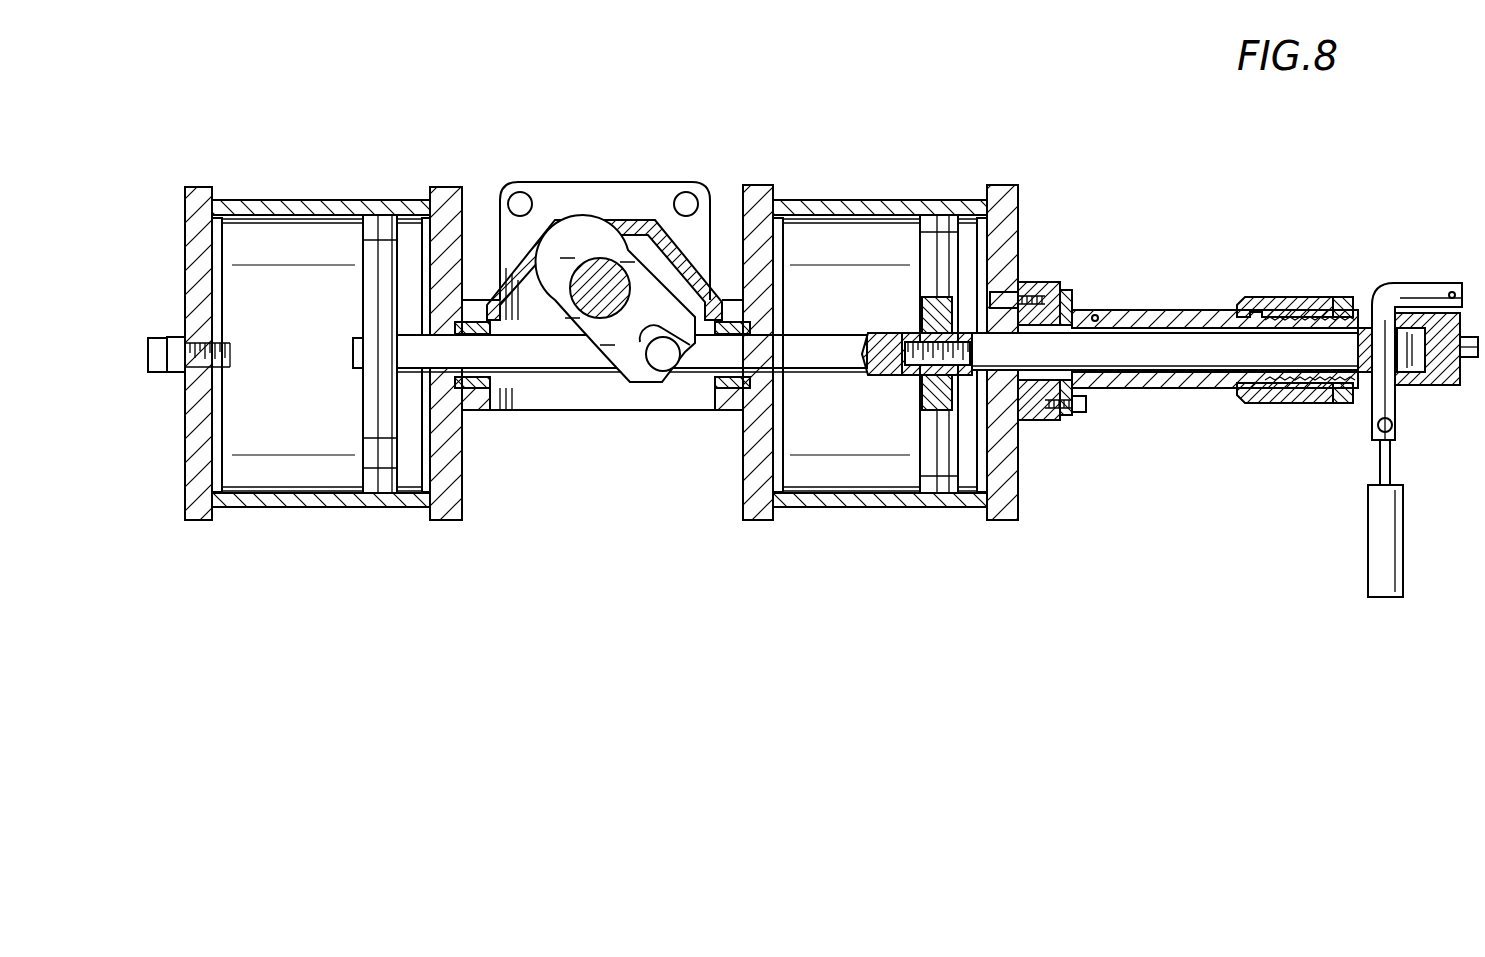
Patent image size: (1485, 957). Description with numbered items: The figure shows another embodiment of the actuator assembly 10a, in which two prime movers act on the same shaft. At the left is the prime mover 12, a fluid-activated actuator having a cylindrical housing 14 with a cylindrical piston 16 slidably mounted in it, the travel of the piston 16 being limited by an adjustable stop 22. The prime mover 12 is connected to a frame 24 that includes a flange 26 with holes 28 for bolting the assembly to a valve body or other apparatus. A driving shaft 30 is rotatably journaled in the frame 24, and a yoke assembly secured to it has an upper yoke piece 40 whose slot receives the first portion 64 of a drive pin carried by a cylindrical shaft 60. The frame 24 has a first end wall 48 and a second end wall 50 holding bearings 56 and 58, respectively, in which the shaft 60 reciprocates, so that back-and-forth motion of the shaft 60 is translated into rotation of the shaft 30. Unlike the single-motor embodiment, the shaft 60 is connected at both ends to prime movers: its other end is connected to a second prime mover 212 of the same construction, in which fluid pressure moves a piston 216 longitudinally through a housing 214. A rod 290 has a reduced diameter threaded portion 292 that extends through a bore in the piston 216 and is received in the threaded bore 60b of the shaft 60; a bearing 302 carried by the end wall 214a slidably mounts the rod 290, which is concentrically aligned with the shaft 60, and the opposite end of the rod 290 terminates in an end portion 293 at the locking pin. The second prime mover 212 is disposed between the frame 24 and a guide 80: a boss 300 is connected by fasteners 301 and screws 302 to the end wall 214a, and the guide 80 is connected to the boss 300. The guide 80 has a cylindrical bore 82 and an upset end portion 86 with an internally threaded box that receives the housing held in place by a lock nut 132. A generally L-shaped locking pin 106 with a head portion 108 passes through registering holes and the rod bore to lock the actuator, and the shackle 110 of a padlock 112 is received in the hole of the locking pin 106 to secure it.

The actuator assembly 10a is at (850, 110).
The prime mover 12 is at (310, 184).
The cylindrical housing 14 is at (255, 200).
The cylindrical piston 16 is at (375, 212).
The adjustable stop 22 is at (158, 374).
The frame 24 is at (648, 128).
The flange 26 is at (605, 208).
The holes 28 is at (686, 203).
The driving shaft 30 is at (598, 300).
The upper yoke piece 40 is at (634, 382).
The first end wall 48 is at (478, 410).
The second end wall 50 is at (735, 410).
The bearing 56 is at (470, 300).
The bearing 58 is at (728, 305).
The cylindrical shaft 60 is at (820, 374).
The threaded bore 60b is at (900, 333).
The first portion of drive pin 64 is at (672, 372).
The guide 80 is at (1170, 310).
The cylindrical bore 82 is at (1190, 378).
The upset end portion 86 is at (1265, 400).
The locking pin 106 is at (1384, 390).
The head portion 108 is at (1425, 284).
The shackle 110 is at (1383, 462).
The padlock 112 is at (1375, 572).
The lock nut 132 is at (1342, 296).
The prime mover 212 is at (908, 160).
The housing 214 is at (855, 508).
The end wall 214a is at (1002, 515).
The piston 216 is at (935, 225).
The rod 290 is at (1130, 372).
The reduced diameter threaded portion 292 is at (905, 377).
The rod end 293 is at (1465, 374).
The boss 300 is at (1040, 286).
The bolt 301 is at (1000, 265).
The screws / bearing 302 is at (1068, 302).